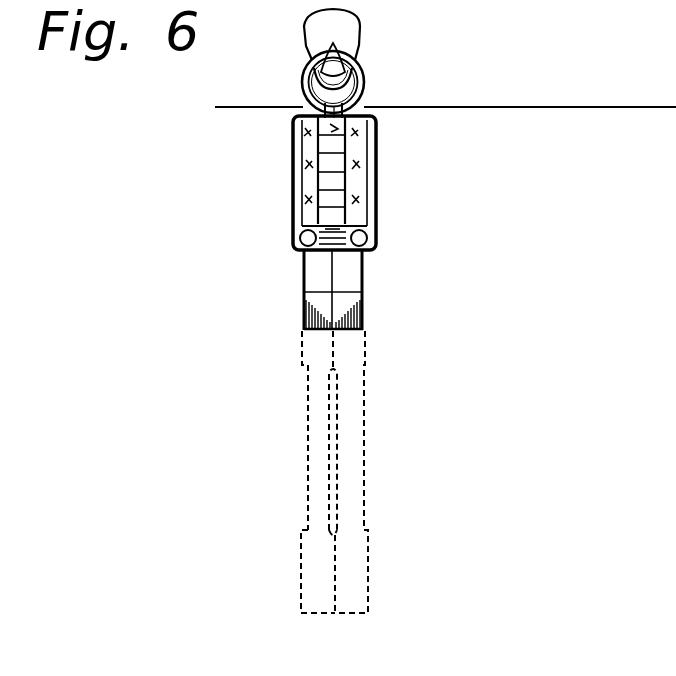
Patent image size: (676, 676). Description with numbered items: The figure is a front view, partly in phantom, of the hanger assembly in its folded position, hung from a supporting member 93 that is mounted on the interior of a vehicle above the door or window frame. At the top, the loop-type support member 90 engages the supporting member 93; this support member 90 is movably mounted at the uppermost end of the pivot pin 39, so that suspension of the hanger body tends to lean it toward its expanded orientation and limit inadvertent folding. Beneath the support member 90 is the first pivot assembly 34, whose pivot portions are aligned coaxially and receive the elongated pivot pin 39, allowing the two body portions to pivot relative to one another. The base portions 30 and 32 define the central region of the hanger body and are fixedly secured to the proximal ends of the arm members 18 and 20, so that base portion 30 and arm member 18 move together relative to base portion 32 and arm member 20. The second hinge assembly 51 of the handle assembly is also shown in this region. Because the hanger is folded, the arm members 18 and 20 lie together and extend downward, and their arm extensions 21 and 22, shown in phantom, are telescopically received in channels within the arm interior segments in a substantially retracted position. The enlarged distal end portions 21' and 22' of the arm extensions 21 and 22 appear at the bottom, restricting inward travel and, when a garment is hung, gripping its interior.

The arm member 18 is at (366, 315).
The arm member 20 is at (300, 315).
The arm extension 21 is at (400, 430).
The distal end portion 21' is at (387, 571).
The arm extension 22 is at (285, 430).
The distal end portion 22' is at (282, 571).
The base portion 30 is at (366, 275).
The base portion 32 is at (300, 275).
The first pivot assembly 34 is at (372, 119).
The pivot pin 39 is at (325, 90).
The second hinge assembly 51 is at (345, 259).
The support member 90 is at (365, 71).
The supporting member 93 is at (333, 48).